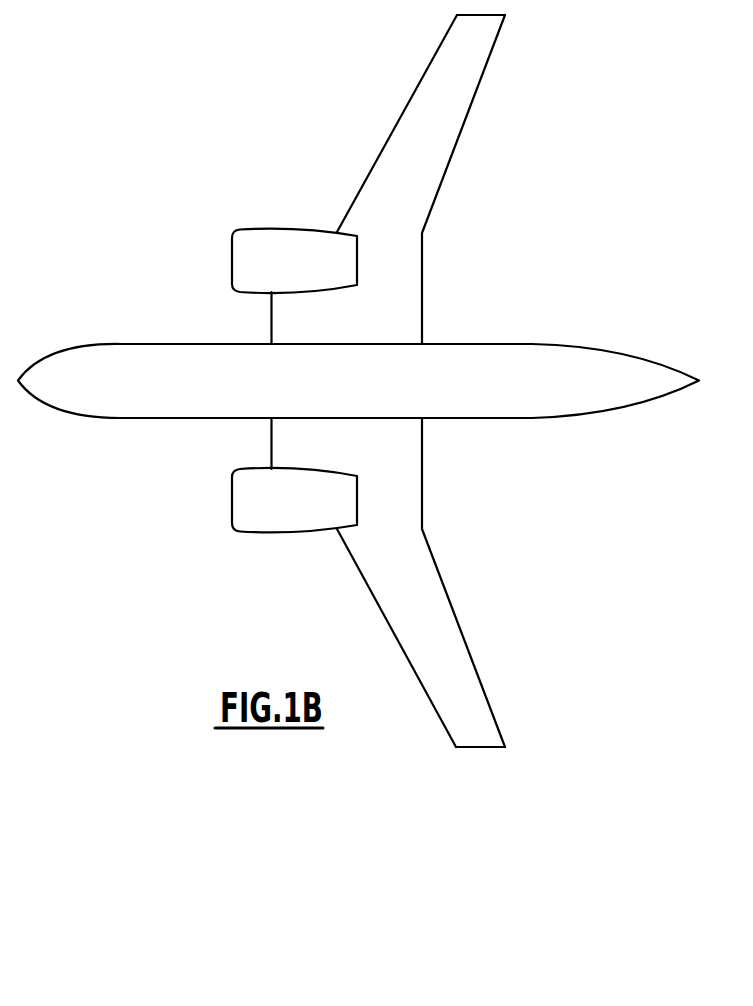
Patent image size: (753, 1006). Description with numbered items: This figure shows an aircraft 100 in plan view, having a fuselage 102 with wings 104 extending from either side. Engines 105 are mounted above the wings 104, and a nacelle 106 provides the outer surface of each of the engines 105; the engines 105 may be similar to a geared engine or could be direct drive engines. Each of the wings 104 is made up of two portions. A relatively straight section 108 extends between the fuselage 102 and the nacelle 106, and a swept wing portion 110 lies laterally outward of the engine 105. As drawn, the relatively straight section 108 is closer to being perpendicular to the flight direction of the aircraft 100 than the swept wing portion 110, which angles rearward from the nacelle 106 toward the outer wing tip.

The aircraft 100 is at (222, 602).
The fuselage 102 is at (154, 380).
The wings 104 is at (395, 160).
The engines 105 is at (308, 195).
The nacelle 106 is at (277, 243).
The relatively straight section 108 is at (271, 321).
The swept wing portion 110 is at (437, 52).